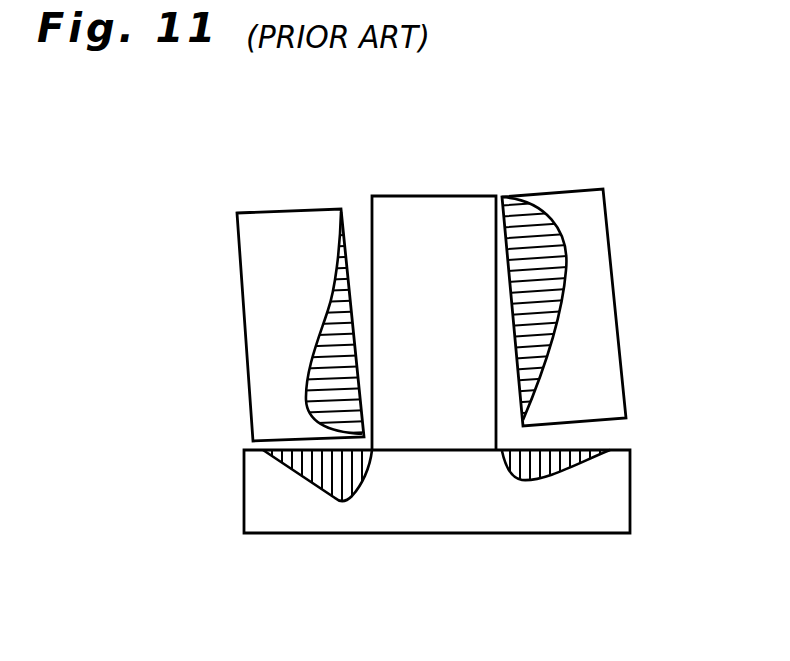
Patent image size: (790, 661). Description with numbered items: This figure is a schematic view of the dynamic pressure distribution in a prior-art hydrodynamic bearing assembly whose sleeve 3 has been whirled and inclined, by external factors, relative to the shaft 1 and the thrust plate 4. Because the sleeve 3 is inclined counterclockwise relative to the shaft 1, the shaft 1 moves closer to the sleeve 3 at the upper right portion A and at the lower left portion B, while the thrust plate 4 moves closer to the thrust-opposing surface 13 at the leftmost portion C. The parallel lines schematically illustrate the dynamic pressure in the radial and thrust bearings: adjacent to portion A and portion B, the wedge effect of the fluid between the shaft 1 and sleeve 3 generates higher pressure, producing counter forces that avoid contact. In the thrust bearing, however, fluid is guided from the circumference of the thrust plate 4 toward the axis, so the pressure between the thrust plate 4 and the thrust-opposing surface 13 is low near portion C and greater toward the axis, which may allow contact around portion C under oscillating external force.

The shaft 1 is at (441, 217).
The sleeve 3 is at (600, 226).
The thrust plate 4 is at (622, 510).
The thrust-opposing surface 13 is at (275, 440).
The upper right portion A is at (522, 232).
The lower left portion B is at (360, 412).
The leftmost portion C is at (273, 454).